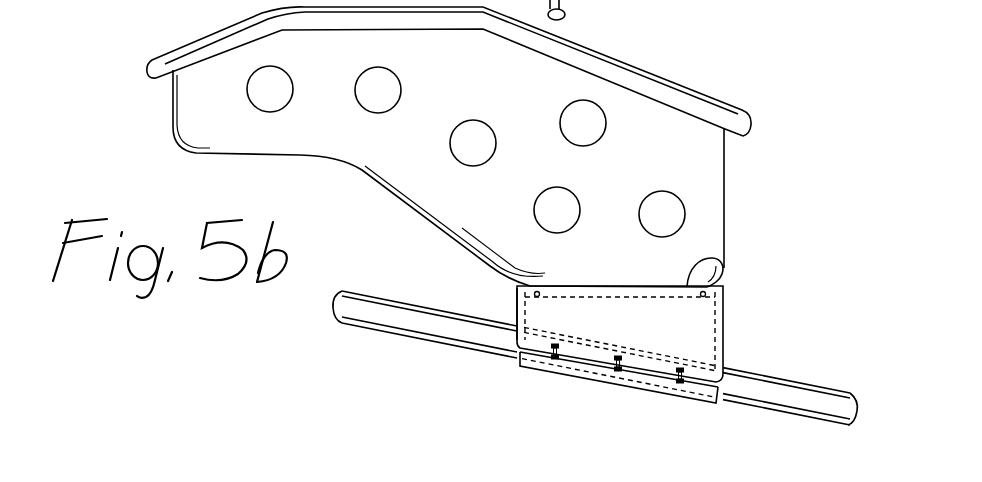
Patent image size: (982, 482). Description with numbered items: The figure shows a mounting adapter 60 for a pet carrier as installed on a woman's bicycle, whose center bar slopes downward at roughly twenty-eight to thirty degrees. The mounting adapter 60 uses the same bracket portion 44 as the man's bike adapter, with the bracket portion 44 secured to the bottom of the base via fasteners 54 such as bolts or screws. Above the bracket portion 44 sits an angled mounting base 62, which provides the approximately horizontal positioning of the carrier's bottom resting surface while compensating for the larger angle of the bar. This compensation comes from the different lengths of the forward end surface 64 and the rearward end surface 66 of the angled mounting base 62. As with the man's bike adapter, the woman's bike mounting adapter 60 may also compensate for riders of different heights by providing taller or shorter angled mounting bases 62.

The bracket portion 44 is at (652, 382).
The fasteners 54 is at (555, 360).
The mounting adapter 60 is at (750, 286).
The angled mounting base 62 is at (712, 260).
The forward end surface 64 is at (515, 304).
The rearward end surface 66 is at (724, 321).